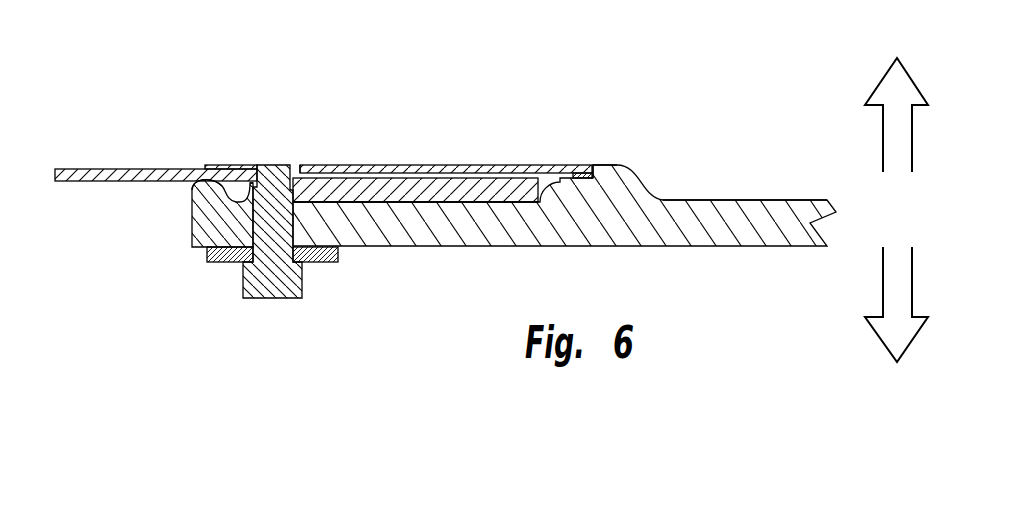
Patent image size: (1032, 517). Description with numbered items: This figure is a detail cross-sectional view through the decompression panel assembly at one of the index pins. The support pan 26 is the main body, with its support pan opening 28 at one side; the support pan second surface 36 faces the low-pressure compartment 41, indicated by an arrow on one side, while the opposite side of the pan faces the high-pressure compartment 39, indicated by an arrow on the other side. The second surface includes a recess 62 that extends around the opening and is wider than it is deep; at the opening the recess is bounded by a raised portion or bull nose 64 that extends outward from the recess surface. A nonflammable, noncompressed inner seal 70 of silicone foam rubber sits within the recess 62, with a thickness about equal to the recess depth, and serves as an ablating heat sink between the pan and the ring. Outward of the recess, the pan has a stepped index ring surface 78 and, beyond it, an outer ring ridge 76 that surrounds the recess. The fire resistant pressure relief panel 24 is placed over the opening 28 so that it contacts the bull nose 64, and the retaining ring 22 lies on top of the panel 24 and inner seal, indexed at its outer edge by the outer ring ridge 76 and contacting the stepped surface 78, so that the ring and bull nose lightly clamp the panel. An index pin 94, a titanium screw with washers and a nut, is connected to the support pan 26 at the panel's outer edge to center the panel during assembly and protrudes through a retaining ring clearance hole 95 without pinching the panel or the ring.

The retaining ring 22 is at (215, 165).
The fire resistant pressure relief panel 24 is at (98, 168).
The support pan 26 is at (600, 233).
The support pan opening 28 is at (193, 240).
The support pan second surface 36 is at (760, 200).
The high-pressure compartment 39 is at (905, 335).
The low-pressure compartment 41 is at (905, 86).
The recess 62 is at (252, 190).
The raised portion (bull nose) 64 is at (193, 185).
The inner seal 70 is at (443, 187).
The outer ring ridge 76 is at (598, 165).
The stepped index ring surface 78 is at (577, 172).
The index pins 94 is at (260, 165).
The retaining ring clearance holes 95 is at (296, 168).